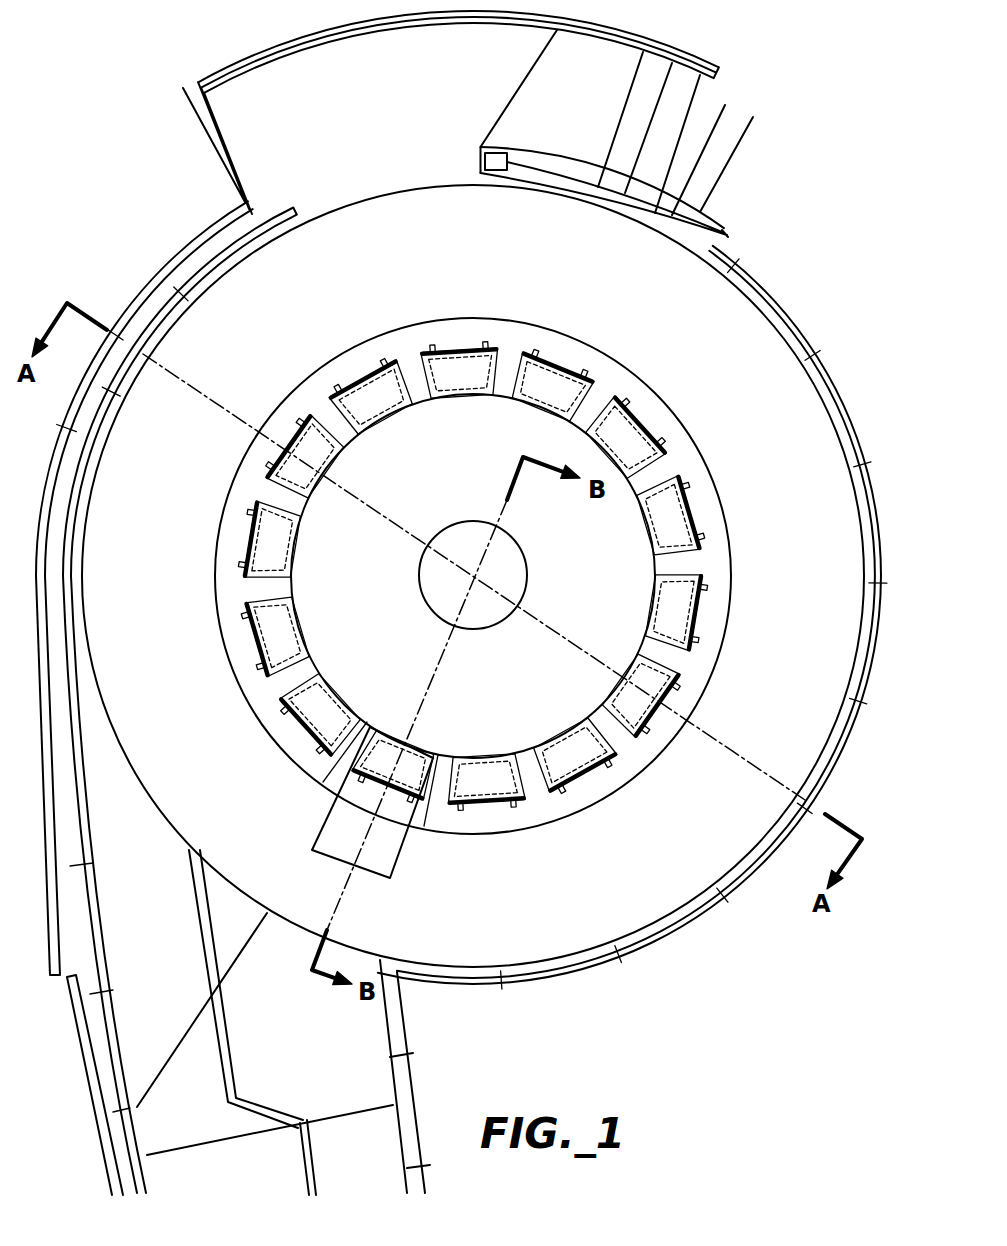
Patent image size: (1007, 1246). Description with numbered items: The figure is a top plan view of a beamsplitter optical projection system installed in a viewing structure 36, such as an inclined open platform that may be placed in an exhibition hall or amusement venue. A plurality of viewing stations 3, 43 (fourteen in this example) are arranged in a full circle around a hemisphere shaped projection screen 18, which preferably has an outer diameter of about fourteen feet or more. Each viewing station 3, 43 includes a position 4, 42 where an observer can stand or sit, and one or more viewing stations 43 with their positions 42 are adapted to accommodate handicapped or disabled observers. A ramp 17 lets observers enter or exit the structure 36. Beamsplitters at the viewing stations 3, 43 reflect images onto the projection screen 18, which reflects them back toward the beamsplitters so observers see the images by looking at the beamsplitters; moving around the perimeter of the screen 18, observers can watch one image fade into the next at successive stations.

The viewing station 3 is at (473, 576).
The position 4 is at (472, 576).
The ramp 17 is at (390, 1142).
The projection screen 18 is at (512, 697).
The viewing structure 36 is at (780, 355).
The position 42 is at (372, 802).
The viewing station 43 is at (396, 764).